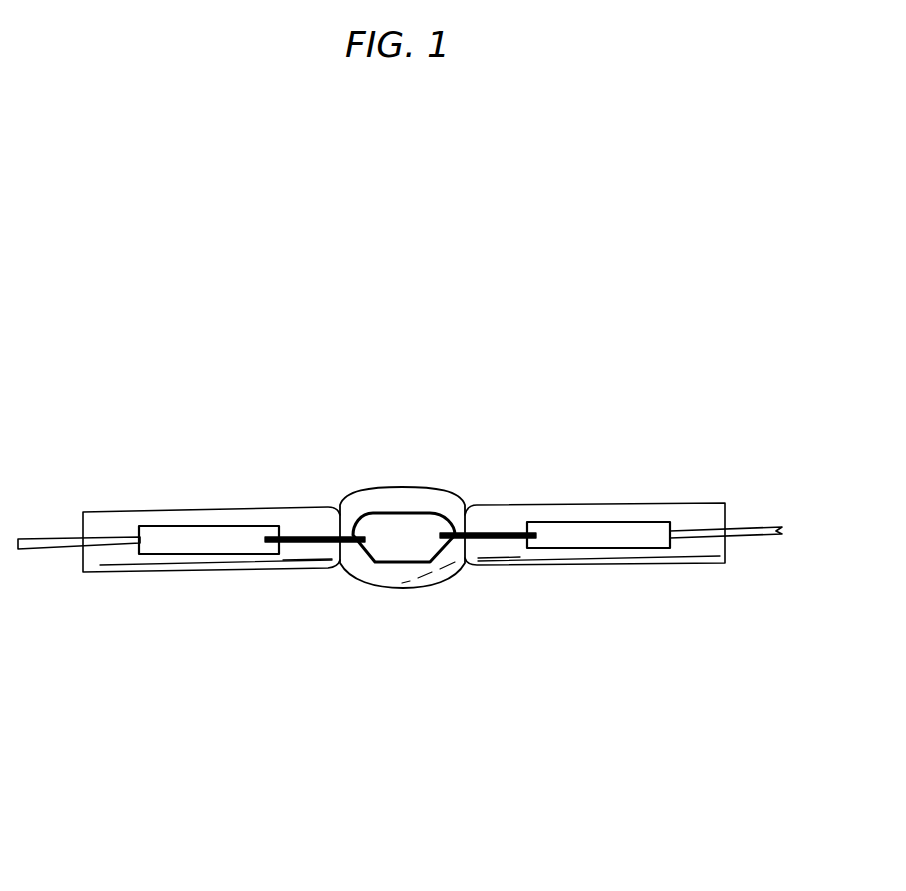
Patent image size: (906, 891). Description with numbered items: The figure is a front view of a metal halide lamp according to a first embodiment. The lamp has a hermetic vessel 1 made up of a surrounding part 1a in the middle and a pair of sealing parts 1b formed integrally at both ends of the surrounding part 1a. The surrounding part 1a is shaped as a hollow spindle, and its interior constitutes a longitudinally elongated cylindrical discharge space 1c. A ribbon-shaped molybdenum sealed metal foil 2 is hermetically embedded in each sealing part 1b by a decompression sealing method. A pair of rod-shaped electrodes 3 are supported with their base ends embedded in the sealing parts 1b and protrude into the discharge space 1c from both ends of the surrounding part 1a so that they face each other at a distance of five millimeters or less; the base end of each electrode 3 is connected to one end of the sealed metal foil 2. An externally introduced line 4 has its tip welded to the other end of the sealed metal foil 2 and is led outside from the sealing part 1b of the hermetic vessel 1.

The hermetic vessel 1 is at (405, 487).
The surrounding part 1a is at (390, 579).
The sealing part 1b is at (183, 563).
The discharge space 1c is at (412, 556).
The sealed metal foil 2 is at (215, 527).
The electrode 3 is at (358, 556).
The externally introduced line 4 is at (50, 538).